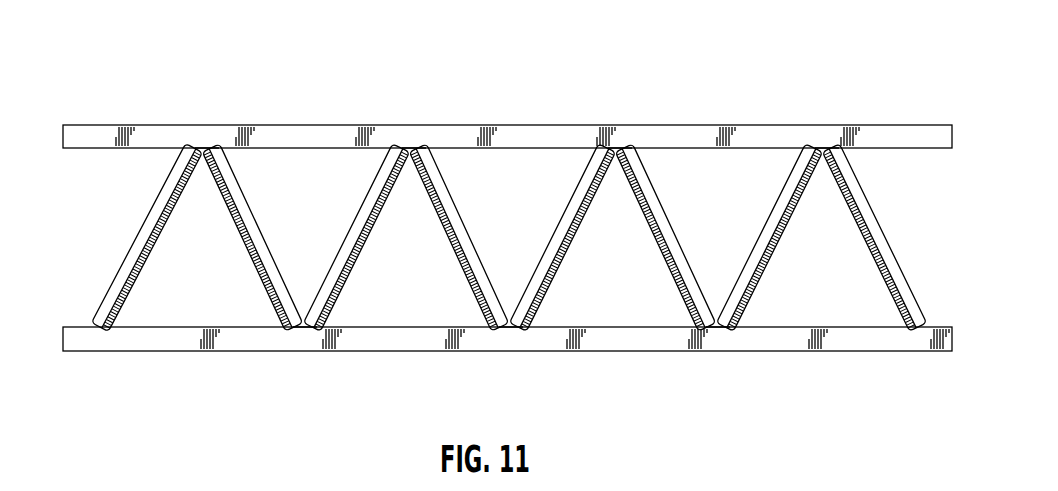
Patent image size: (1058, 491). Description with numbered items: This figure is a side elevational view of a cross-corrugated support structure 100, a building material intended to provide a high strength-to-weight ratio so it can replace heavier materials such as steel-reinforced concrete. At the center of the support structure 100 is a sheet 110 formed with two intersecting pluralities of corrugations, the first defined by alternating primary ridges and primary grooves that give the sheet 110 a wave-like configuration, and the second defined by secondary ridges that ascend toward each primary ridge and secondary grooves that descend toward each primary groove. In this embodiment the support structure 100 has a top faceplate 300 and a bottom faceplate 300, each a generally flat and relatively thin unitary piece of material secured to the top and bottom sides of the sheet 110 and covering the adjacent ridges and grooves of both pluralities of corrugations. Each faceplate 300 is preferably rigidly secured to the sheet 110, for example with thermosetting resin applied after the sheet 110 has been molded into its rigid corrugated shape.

The support structure 100 is at (199, 42).
The sheet 110 is at (501, 238).
The faceplate 300 is at (140, 125).